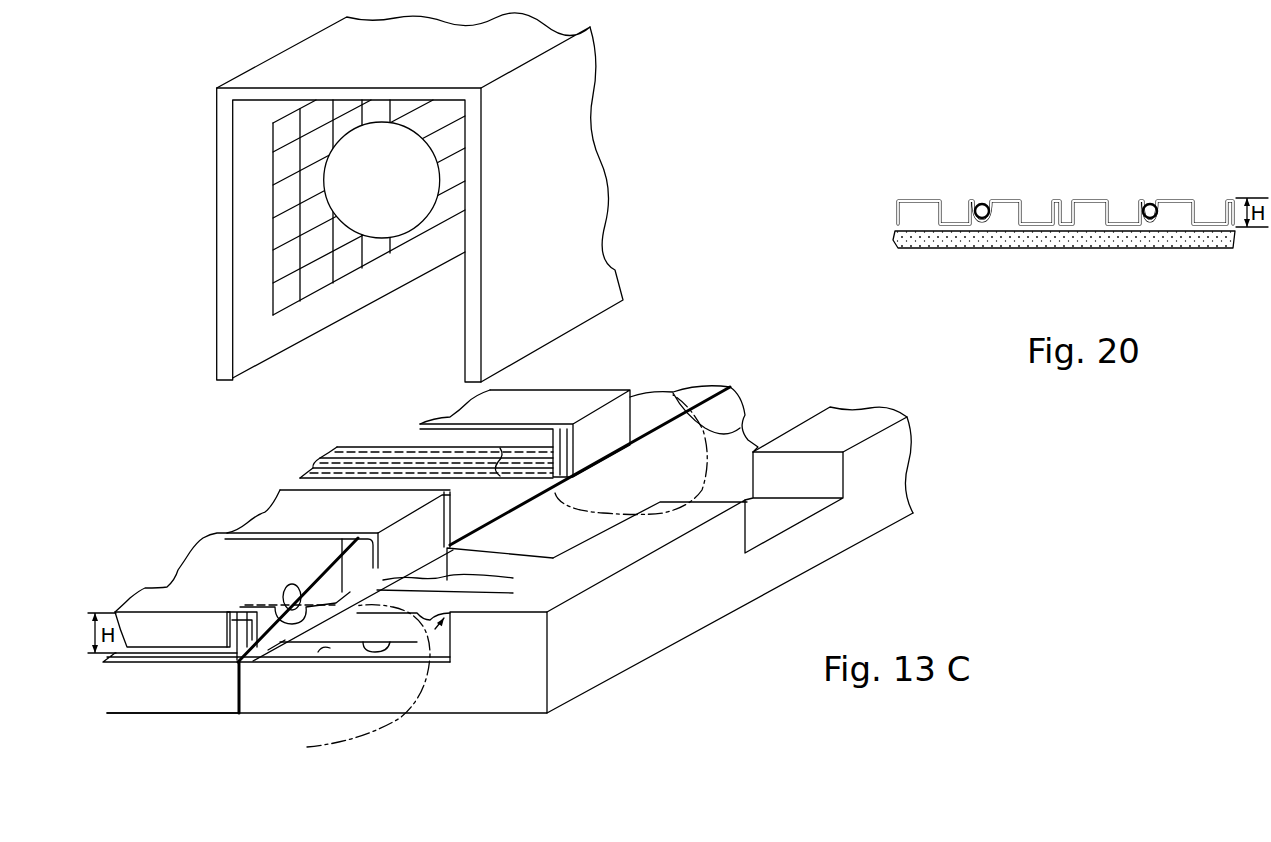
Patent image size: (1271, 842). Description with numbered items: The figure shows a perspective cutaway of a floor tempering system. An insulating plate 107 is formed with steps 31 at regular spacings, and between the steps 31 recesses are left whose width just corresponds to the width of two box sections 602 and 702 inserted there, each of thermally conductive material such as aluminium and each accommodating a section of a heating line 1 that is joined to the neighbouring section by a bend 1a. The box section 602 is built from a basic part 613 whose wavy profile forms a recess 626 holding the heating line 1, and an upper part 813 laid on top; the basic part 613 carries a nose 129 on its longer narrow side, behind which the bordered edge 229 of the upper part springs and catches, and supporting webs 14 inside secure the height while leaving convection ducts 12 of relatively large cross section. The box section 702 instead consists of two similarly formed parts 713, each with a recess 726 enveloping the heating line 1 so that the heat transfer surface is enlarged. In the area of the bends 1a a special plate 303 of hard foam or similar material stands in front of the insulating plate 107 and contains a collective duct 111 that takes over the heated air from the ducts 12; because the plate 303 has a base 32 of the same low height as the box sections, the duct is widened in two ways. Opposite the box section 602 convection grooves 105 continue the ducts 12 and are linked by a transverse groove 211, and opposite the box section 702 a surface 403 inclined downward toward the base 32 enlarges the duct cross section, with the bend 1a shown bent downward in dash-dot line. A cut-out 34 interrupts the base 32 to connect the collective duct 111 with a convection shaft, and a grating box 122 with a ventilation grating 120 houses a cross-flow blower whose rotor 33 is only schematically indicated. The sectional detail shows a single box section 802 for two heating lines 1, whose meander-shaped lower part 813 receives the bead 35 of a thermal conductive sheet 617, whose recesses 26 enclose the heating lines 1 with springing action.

In FIG. 13C, the ventilation grating 120 is at (287, 180).
In FIG. 13C, the grating box 122 is at (596, 305).
In FIG. 13C, the rotor 33 is at (374, 190).
In FIG. 13C, the steps 31 is at (467, 403).
In FIG. 13C, the basic part of box section 702 713 is at (377, 442).
In FIG. 13C, the recess 726 is at (330, 457).
In FIG. 13C, the box section 702 is at (307, 467).
In FIG. 13C, the box section 602 is at (175, 572).
In FIG. 13C, the upper part / lower part 813 is at (188, 621).
In FIG. 20, the upper part / lower part 813 is at (922, 206).
In FIG. 13C, the heating line 1 is at (272, 590).
In FIG. 20, the heating line 1 is at (983, 203).
In FIG. 13C, the convection ducts 12 is at (313, 578).
In FIG. 20, the convection ducts 12 is at (952, 206).
In FIG. 13C, the supporting webs 14 is at (335, 567).
In FIG. 13C, the nose 129 is at (233, 638).
In FIG. 13C, the basic part 613 is at (158, 654).
In FIG. 13C, the bordered edge 229 is at (247, 634).
In FIG. 13C, the recess 626 is at (280, 644).
In FIG. 13C, the convection grooves 105 is at (315, 653).
In FIG. 13C, the transverse groove 211 is at (380, 648).
In FIG. 13C, the insulating plate 107 is at (207, 701).
In FIG. 20, the insulating plate 107 is at (1012, 240).
In FIG. 13C, the collective duct 111 is at (453, 640).
In FIG. 13C, the bend 1a is at (705, 478).
In FIG. 13C, the inclined surface 403 is at (735, 453).
In FIG. 13C, the cut-out 34 is at (788, 516).
In FIG. 13C, the base 32 is at (555, 587).
In FIG. 13C, the plate 303 is at (572, 672).
In FIG. 20, the box section 802 is at (920, 187).
In FIG. 20, the thermal conductive sheet 617 is at (1022, 199).
In FIG. 20, the bead 35 is at (1066, 199).
In FIG. 20, the recesses 26 is at (965, 213).